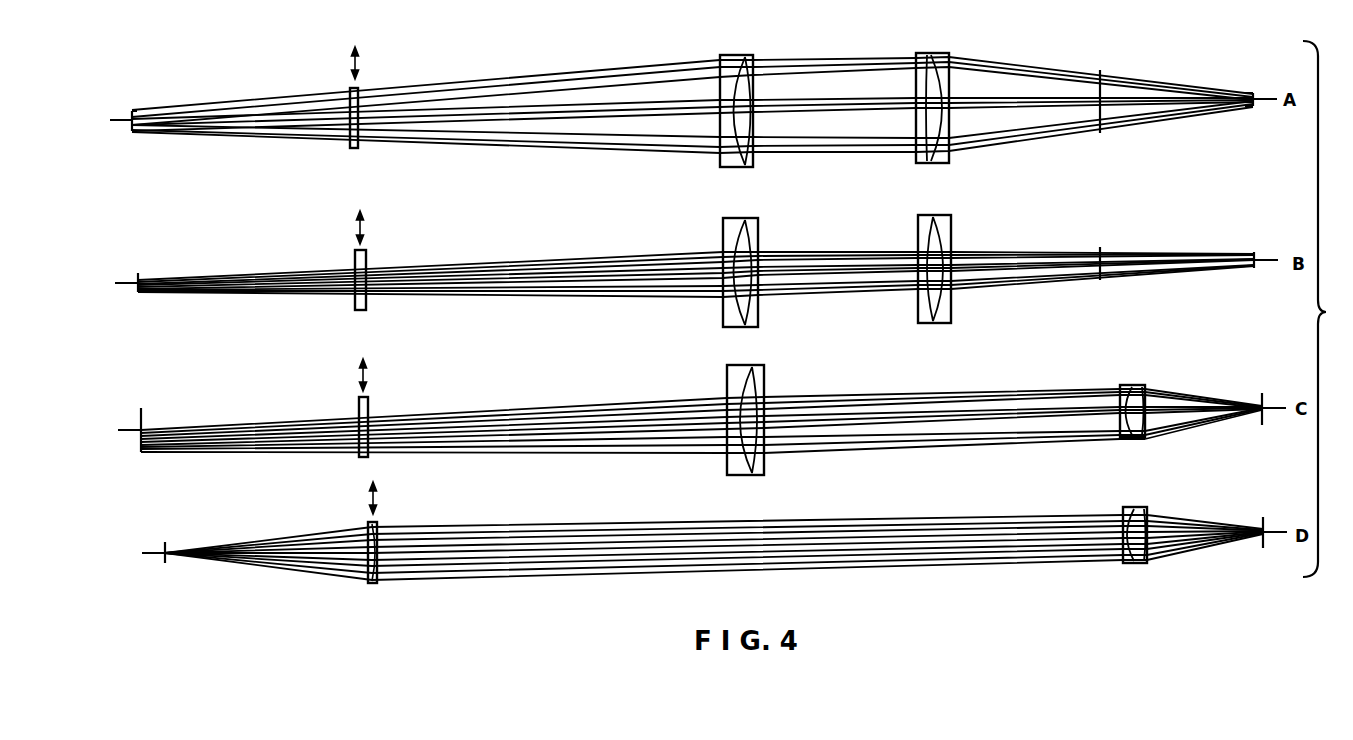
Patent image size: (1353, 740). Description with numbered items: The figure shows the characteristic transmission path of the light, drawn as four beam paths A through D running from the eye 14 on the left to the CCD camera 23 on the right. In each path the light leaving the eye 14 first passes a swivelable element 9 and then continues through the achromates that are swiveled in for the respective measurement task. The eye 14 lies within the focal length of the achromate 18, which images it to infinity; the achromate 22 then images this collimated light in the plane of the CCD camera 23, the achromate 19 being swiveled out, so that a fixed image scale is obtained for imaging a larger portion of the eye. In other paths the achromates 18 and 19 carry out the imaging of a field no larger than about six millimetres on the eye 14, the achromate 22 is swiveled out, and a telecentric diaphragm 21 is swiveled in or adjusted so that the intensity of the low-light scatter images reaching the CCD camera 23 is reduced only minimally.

The eye 14 is at (136, 324).
The movable optical plate (lens) element 9 is at (360, 147).
The achromate 18 is at (737, 53).
The achromate 19 is at (933, 52).
The telecentric diaphragm 21 is at (1100, 70).
The achromate 22 is at (1137, 386).
The CCD camera 23 is at (1266, 308).